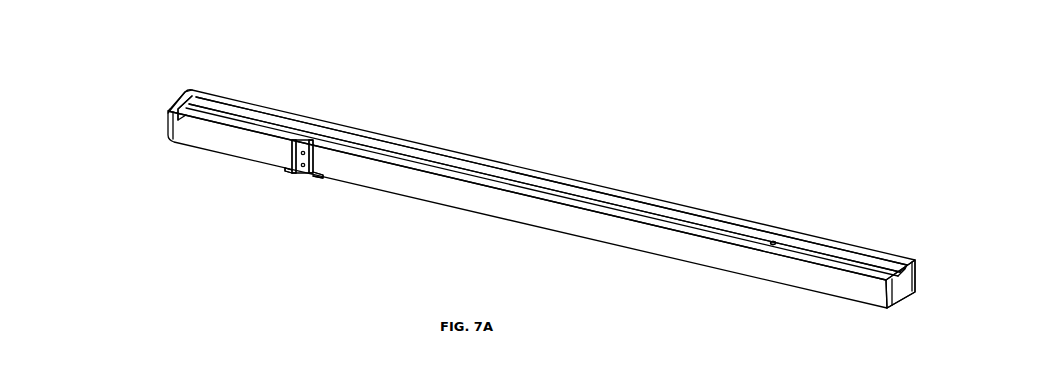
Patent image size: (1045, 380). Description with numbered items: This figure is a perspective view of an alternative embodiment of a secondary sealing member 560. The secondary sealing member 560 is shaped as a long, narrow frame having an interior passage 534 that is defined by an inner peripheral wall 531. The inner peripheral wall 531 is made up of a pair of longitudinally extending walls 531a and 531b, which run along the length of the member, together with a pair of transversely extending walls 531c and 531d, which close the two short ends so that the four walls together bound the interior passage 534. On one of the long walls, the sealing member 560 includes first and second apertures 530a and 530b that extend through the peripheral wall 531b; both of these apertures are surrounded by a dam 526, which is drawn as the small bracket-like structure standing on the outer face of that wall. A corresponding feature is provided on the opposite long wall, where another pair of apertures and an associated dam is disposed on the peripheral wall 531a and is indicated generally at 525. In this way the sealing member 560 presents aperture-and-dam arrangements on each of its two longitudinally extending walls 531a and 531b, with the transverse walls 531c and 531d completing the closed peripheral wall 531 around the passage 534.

The secondary sealing member 560 is at (547, 37).
The inner peripheral wall 531 is at (832, 230).
The longitudinally extending wall 531a is at (497, 158).
The longitudinally extending wall 531b is at (643, 238).
The transversely extending wall 531c is at (913, 298).
The transversely extending wall 531d is at (183, 100).
The interior passage 534 is at (260, 118).
The pair of apertures and associated dam 525 is at (780, 223).
The dam 526 is at (317, 166).
The first aperture 530a is at (290, 160).
The second aperture 530b is at (307, 177).